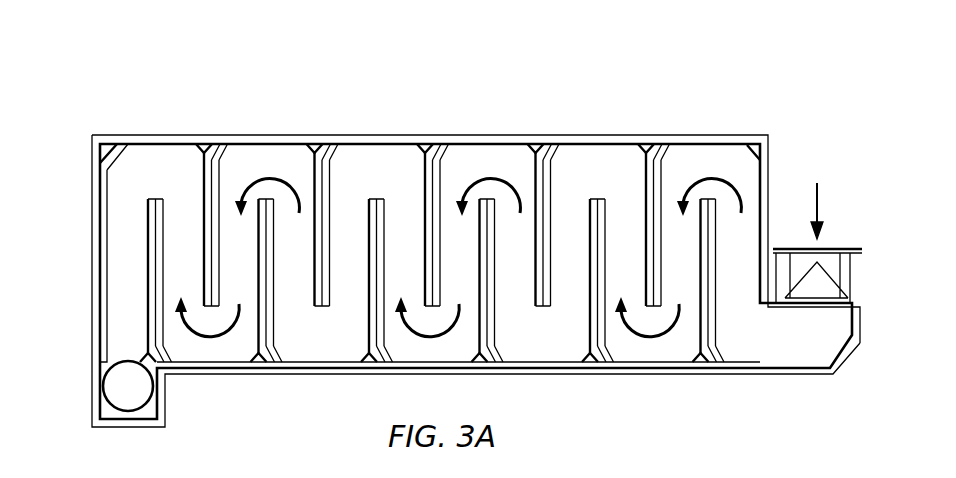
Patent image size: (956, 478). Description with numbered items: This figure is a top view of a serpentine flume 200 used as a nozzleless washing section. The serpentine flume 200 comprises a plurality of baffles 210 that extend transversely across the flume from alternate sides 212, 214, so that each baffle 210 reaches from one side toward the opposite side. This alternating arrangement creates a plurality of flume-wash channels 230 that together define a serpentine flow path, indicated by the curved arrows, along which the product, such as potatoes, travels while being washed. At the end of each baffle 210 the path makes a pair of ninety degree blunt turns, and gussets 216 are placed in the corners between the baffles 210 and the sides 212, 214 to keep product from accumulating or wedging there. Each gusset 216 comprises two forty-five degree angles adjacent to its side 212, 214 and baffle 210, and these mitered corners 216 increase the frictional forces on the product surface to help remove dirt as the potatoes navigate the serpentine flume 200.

The serpentine flume 200 is at (327, 59).
The baffles 210 is at (205, 253).
The side of the serpentine flume 212 is at (655, 375).
The side of the serpentine flume 214 is at (508, 135).
The gussets 216 is at (197, 152).
The flume-wash channels 230 is at (578, 196).